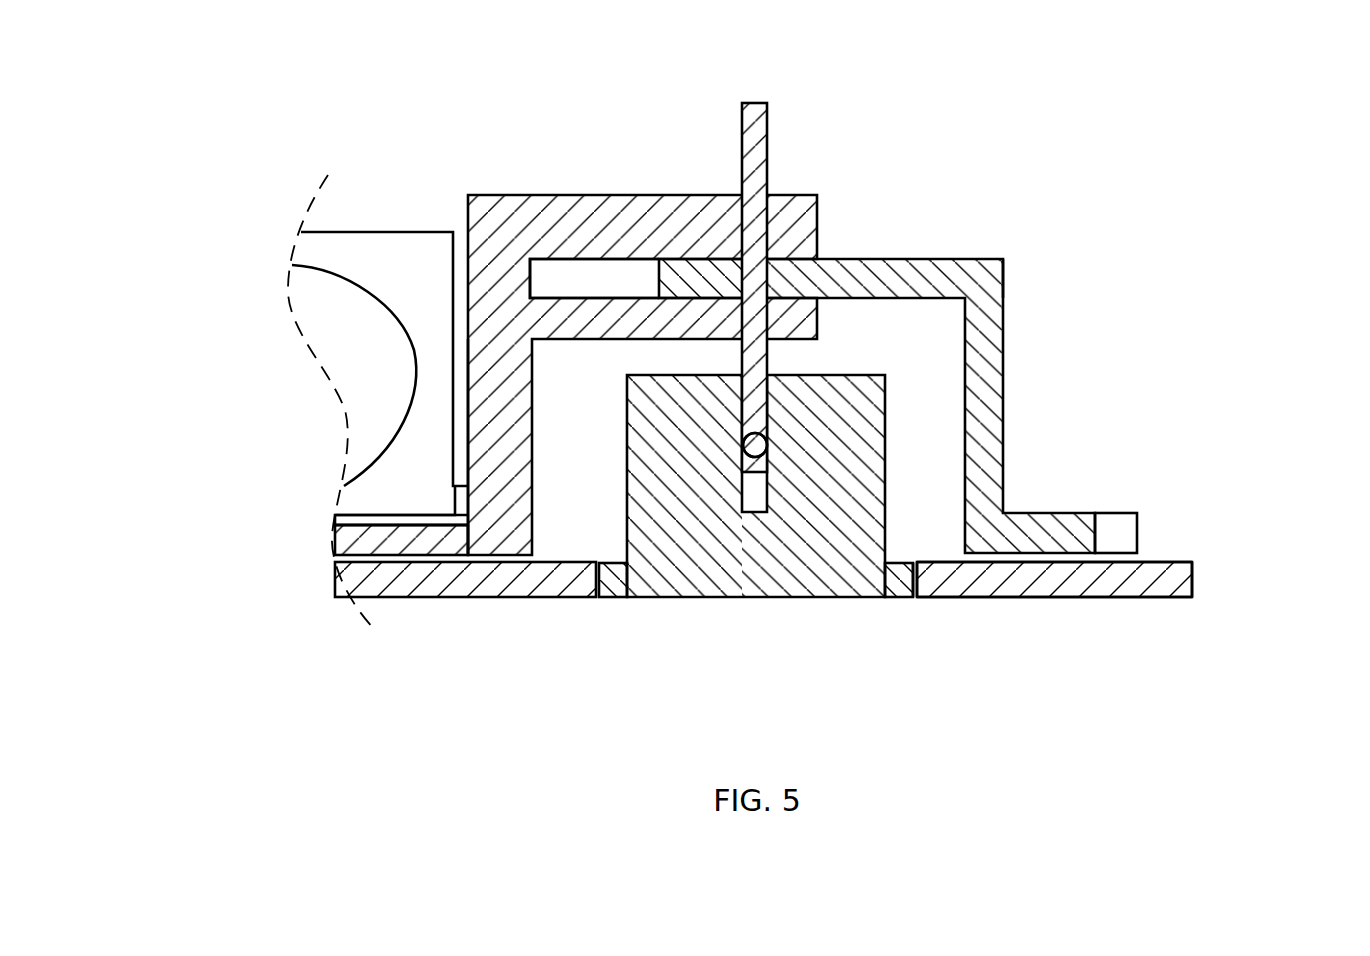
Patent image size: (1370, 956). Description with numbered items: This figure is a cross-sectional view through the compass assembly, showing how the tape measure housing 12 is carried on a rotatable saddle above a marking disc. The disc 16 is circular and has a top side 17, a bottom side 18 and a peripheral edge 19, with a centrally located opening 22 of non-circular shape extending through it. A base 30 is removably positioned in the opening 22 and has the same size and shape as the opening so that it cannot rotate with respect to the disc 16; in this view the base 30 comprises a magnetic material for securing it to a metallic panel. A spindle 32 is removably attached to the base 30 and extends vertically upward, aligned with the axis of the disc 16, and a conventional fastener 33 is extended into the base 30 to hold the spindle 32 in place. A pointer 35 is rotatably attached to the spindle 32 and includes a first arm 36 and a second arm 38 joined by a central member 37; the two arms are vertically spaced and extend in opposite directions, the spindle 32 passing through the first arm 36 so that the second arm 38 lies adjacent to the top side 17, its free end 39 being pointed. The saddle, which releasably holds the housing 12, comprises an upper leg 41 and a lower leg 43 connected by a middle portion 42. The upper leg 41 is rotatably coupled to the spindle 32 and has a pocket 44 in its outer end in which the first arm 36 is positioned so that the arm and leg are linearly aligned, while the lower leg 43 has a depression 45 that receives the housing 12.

The housing 12 is at (358, 232).
The disc 16 is at (1087, 580).
The top side 17 is at (1172, 561).
The bottom side 18 is at (1177, 597).
The peripheral edge 19 is at (1192, 580).
The opening 22 is at (918, 580).
The base 30 is at (670, 560).
The spindle 32 is at (767, 128).
The fastener 33 is at (765, 441).
The pointer 35 is at (1002, 270).
The first arm 36 is at (842, 258).
The central member 37 is at (1002, 367).
The second arm 38 is at (1042, 513).
The free end 39 is at (1137, 532).
The upper leg 41 is at (630, 195).
The middle portion 42 is at (478, 375).
The lower leg 43 is at (417, 555).
The pocket 44 is at (575, 270).
The depression 45 is at (465, 520).